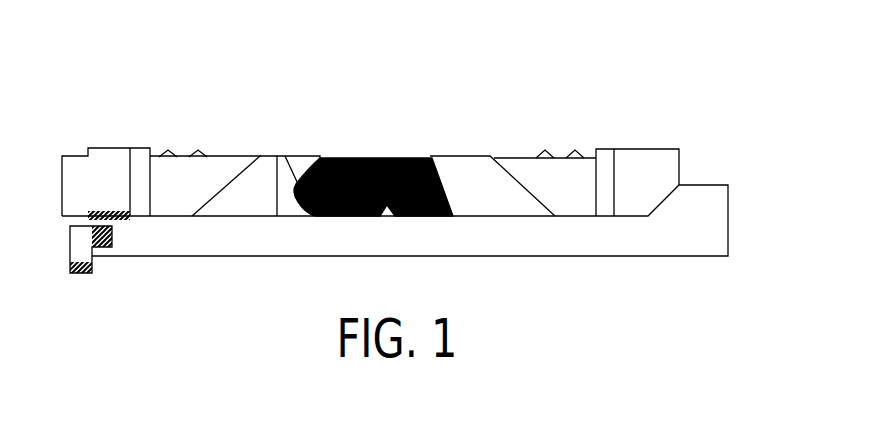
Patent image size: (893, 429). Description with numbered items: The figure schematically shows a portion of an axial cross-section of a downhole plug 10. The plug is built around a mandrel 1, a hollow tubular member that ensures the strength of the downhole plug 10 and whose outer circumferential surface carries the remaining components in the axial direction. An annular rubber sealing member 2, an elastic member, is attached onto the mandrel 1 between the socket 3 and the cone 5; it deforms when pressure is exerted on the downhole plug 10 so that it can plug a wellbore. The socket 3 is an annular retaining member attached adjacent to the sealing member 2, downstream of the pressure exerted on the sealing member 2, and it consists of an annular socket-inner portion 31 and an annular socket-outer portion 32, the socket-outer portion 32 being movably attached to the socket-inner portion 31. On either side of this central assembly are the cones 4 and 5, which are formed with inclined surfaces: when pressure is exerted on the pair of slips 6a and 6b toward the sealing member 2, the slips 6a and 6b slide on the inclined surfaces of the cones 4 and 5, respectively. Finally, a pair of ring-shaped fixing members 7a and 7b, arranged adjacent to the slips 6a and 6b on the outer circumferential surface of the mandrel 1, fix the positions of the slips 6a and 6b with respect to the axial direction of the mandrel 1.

The downhole plug 10 is at (702, 50).
The mandrel 1 is at (715, 185).
The sealing member 2 is at (390, 158).
The socket 3 is at (280, 98).
The socket-inner portion 31 is at (283, 157).
The socket-outer portion 32 is at (308, 157).
The cone 4 is at (268, 157).
The cone 5 is at (464, 157).
The slip 6a is at (222, 157).
The slip 6b is at (520, 158).
The fixing member 7a is at (132, 148).
The fixing member 7b is at (607, 149).